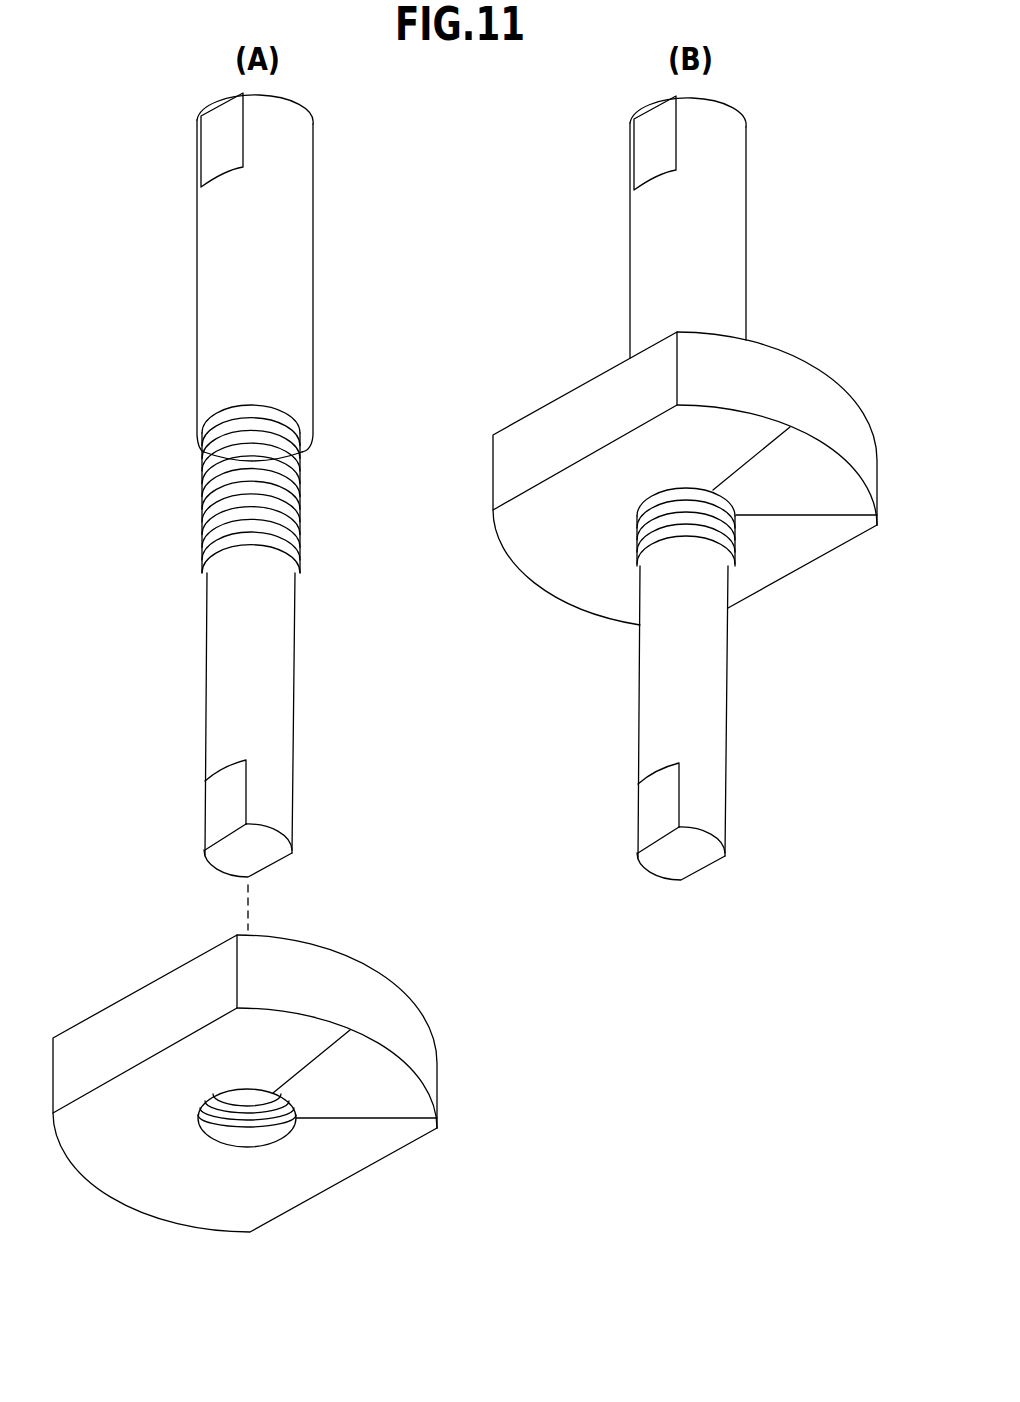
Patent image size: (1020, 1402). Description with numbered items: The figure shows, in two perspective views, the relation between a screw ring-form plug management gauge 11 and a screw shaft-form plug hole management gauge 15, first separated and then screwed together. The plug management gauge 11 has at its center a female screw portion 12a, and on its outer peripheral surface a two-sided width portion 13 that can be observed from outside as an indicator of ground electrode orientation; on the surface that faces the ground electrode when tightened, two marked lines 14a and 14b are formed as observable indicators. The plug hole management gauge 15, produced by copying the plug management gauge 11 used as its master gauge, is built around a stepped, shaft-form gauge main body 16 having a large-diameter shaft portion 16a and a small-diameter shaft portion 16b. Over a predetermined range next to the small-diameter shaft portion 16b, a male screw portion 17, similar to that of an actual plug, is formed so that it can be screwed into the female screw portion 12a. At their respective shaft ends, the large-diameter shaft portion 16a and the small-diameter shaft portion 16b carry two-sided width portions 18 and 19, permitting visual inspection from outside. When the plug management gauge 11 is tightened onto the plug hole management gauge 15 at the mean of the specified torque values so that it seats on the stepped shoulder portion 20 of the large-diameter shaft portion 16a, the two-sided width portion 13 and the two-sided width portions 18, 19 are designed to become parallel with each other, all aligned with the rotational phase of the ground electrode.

The plug management gauge 11 is at (108, 1210).
The female screw portion 12a is at (245, 1130).
The two-sided width portion 13 is at (155, 1000).
The marked line 14a is at (325, 1052).
The marked line 14b is at (360, 1118).
The plug hole management gauge 15 is at (333, 225).
The gauge main body 16 is at (463, 511).
The large-diameter shaft portion 16a is at (293, 318).
The small-diameter shaft portion 16b is at (215, 656).
The male screw portion 17 is at (305, 472).
The two-sided width portion 18 is at (205, 150).
The two-sided width portion 19 is at (215, 812).
The stepped shoulder portion 20 is at (202, 440).